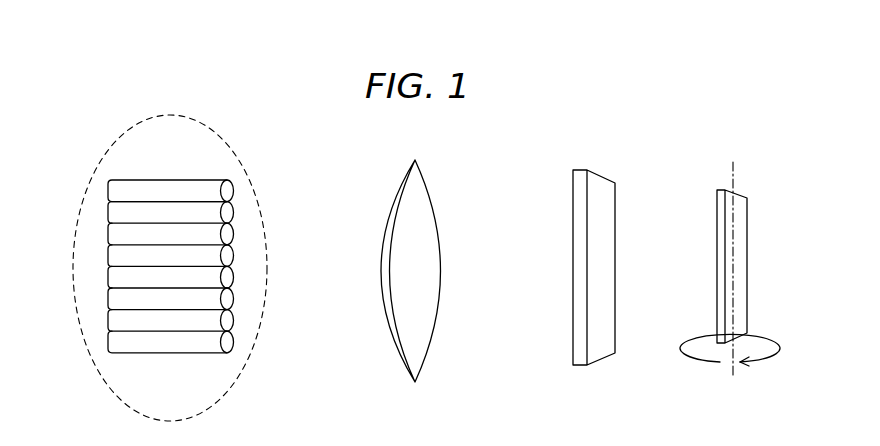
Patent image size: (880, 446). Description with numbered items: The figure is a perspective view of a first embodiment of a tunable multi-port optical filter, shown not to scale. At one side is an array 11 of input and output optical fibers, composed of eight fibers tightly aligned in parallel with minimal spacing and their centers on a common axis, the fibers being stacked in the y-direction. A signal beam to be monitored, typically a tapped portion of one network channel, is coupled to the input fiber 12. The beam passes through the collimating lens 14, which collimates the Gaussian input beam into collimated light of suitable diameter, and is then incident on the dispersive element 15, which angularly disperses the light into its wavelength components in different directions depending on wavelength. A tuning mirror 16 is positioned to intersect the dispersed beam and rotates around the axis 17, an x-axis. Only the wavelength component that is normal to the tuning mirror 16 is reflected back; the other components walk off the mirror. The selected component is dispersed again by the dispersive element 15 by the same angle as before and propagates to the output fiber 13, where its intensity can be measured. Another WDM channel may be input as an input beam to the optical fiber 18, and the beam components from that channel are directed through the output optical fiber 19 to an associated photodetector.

The input fiber array 11 is at (122, 140).
The input fiber 12 is at (108, 190).
The output fiber 13 is at (108, 343).
The collimating lens 14 is at (389, 186).
The dispersive element 15 is at (583, 170).
The tuning mirror 16 is at (720, 190).
The axis 17 is at (735, 172).
The optical fiber 18 is at (108, 233).
The output optical fiber 19 is at (108, 298).